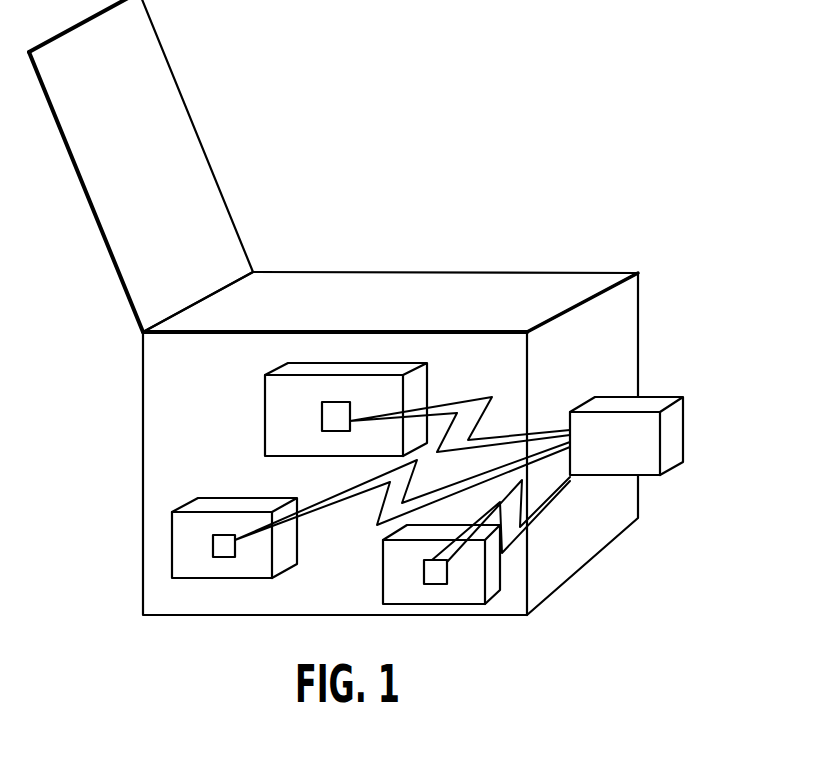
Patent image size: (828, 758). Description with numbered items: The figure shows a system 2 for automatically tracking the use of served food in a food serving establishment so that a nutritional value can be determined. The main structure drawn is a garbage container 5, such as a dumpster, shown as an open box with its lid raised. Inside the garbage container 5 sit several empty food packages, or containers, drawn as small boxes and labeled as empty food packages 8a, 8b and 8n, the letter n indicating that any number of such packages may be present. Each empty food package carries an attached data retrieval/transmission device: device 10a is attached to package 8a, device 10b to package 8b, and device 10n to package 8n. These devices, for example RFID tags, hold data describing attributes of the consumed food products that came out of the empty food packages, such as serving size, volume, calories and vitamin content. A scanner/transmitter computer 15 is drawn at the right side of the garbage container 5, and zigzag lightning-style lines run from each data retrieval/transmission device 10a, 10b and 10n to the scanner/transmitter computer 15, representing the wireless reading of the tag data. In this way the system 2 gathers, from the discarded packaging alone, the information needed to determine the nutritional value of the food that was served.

The system 2 is at (458, 172).
The garbage container 5 is at (143, 380).
The empty food package 8a is at (265, 385).
The empty food package 8b is at (172, 519).
The empty food package 8n is at (495, 583).
The data retrieval/transmission device 10a is at (322, 430).
The data retrieval/transmission device 10b is at (219, 557).
The data retrieval/transmission device 10n is at (445, 584).
The scanner/transmitter computer 15 is at (683, 430).